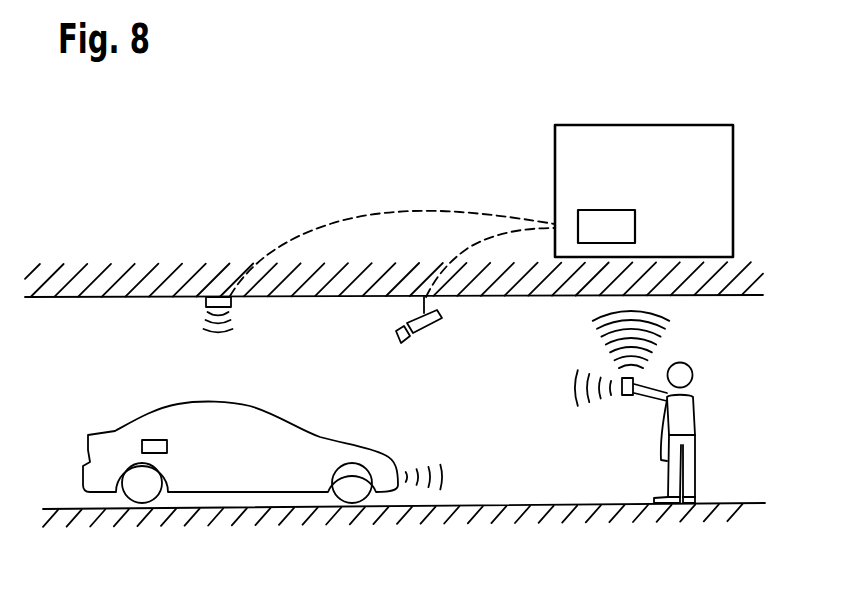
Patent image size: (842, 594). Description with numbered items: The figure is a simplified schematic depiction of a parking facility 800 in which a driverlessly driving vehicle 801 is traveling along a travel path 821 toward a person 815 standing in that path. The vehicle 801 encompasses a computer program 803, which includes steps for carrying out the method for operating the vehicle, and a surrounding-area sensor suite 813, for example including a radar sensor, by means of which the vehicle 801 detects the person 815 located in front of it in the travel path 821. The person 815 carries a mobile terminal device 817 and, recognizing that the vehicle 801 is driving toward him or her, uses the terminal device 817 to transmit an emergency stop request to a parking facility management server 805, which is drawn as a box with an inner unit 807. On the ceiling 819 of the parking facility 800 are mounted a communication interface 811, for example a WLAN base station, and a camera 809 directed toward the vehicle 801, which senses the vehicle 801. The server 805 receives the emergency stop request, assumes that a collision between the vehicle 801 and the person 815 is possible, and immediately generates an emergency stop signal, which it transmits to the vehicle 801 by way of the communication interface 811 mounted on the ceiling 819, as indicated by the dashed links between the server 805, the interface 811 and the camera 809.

The parking facility 800 is at (129, 233).
The vehicle 801 is at (117, 430).
The computer program 803 is at (153, 440).
The parking facility management server 805 is at (555, 142).
The server processing unit 807 is at (606, 210).
The camera 809 is at (428, 330).
The communication interface 811 is at (210, 297).
The surrounding-area sensor suite 813 is at (404, 470).
The person 815 is at (695, 418).
The mobile terminal device 817 is at (641, 381).
The ceiling 819 is at (714, 300).
The travel path 821 is at (735, 504).